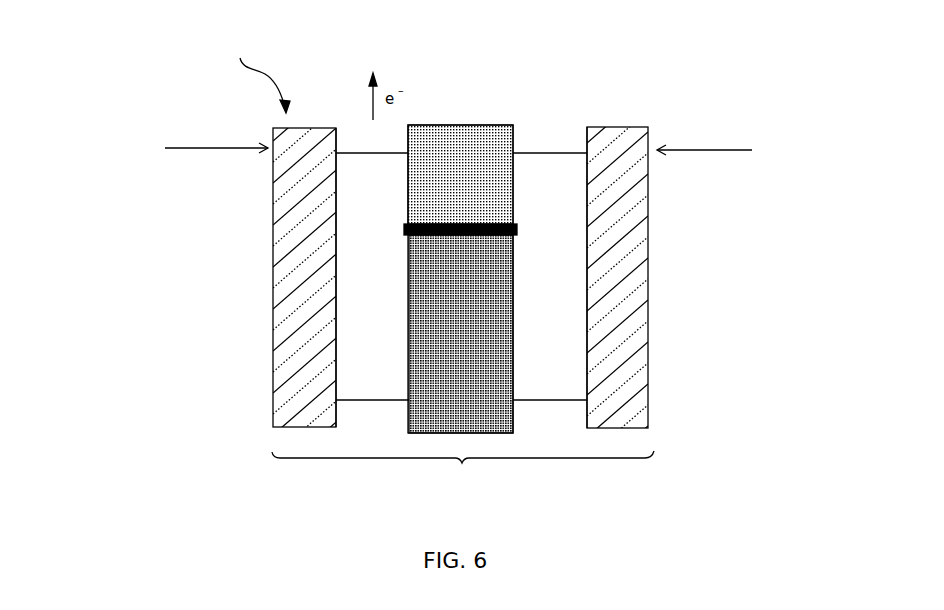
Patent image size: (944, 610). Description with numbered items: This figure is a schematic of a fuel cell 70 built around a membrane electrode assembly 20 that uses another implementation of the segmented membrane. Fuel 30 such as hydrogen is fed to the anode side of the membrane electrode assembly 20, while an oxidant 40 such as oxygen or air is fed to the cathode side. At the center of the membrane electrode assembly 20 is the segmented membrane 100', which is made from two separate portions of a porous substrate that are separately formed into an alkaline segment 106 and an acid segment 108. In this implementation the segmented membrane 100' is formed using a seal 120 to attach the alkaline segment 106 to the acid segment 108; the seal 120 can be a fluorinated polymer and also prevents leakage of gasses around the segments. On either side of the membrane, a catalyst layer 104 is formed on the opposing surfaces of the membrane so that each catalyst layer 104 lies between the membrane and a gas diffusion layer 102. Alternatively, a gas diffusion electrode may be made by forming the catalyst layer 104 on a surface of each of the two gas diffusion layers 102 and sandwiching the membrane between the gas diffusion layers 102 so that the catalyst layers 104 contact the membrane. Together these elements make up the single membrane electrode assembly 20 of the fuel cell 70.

The membrane electrode assembly 20 is at (463, 471).
The fuel 30 is at (190, 149).
The oxidant 40 is at (721, 150).
The fuel cell 70 is at (258, 73).
The segmented membrane 100' is at (460, 250).
The gas diffusion layer 102 is at (303, 355).
The catalyst layer 104 is at (362, 188).
The alkaline segment 106 is at (474, 201).
The acid segment 108 is at (474, 331).
The seal 120 is at (517, 232).